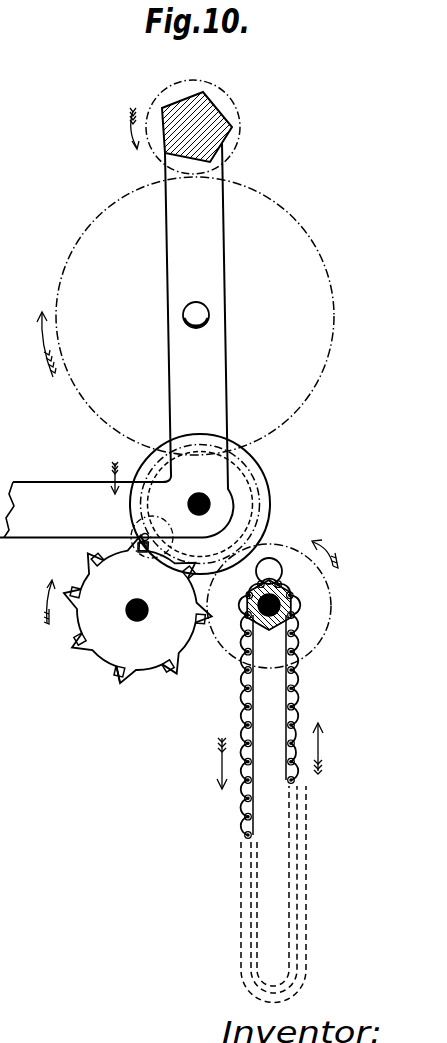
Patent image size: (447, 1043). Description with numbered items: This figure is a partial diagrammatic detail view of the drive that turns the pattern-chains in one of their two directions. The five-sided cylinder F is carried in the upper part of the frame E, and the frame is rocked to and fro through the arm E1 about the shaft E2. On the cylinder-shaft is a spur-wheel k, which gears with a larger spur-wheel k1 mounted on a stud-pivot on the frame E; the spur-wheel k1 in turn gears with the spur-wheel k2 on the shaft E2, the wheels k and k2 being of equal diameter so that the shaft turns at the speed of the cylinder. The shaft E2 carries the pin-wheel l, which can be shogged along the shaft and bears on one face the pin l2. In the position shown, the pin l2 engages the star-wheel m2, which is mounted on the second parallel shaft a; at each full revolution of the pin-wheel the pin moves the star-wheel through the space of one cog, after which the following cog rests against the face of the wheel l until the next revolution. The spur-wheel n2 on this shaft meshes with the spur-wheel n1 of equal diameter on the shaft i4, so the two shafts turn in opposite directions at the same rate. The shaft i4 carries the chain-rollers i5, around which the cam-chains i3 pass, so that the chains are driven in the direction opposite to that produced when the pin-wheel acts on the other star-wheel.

The cylinder F is at (194, 122).
The spur-wheel k is at (242, 123).
The spur-wheel k1 is at (317, 248).
The frame E is at (116, 340).
The arm E1 is at (24, 495).
The shaft E2 is at (188, 505).
The spur-wheel k2 is at (245, 485).
The pin-wheel l is at (263, 499).
The pin l2 is at (143, 535).
The second parallel shaft a is at (142, 602).
The star-wheel m2 is at (103, 655).
The spur-wheel n2 is at (127, 671).
The spur-wheel n1 is at (333, 611).
The cam-chains i3 is at (240, 698).
The shaft i4 is at (292, 605).
The chain-rollers i5 is at (273, 627).